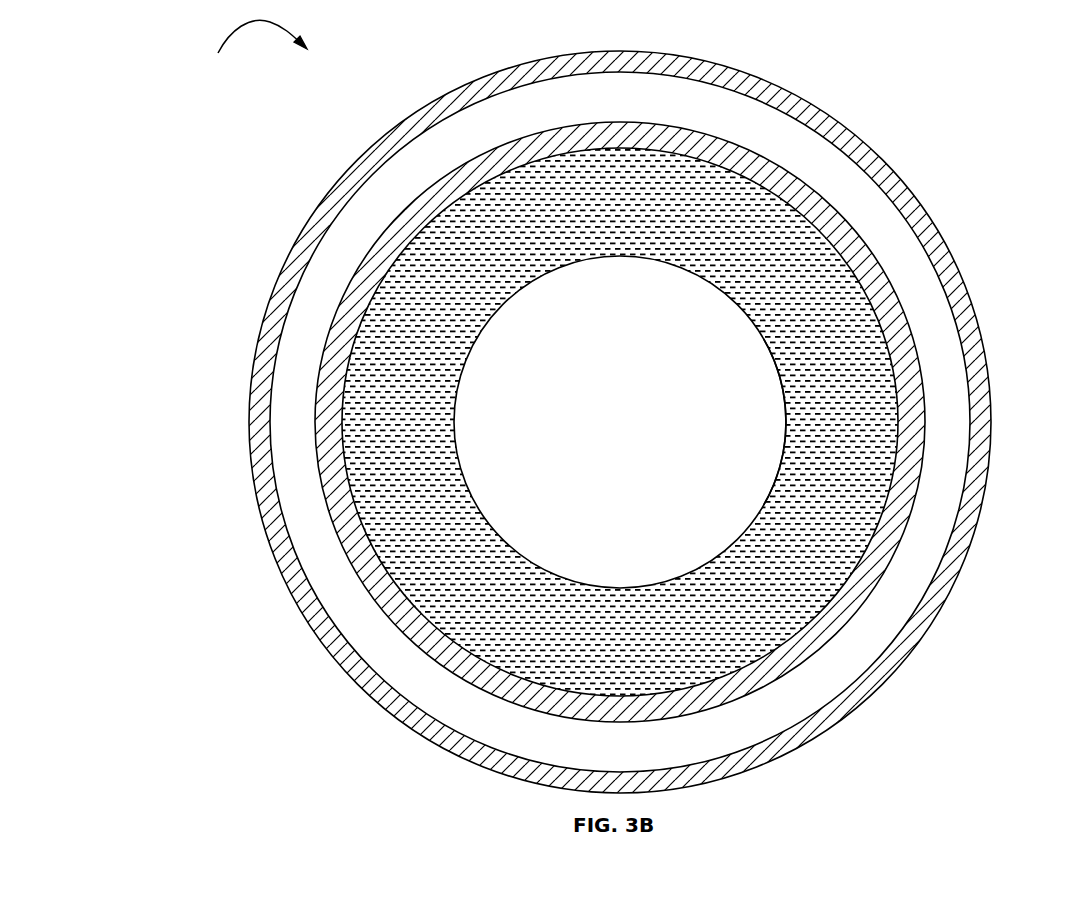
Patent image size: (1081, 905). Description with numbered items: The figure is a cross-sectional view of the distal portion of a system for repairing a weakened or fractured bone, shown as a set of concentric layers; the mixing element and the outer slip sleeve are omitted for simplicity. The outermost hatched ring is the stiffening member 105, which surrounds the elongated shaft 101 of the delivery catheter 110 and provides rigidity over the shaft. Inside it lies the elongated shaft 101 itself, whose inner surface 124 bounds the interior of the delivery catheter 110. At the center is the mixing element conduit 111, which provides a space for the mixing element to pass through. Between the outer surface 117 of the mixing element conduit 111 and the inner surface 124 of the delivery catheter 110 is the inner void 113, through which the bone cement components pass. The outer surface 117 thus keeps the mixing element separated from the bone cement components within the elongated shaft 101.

The delivery catheter 110 is at (249, 48).
The stiffening member 105 is at (802, 102).
The elongated shaft 101 is at (800, 200).
The inner surface of the delivery catheter 124 is at (865, 283).
The inner void 113 is at (820, 347).
The outer surface of the mixing element conduit 117 is at (784, 397).
The mixing element conduit 111 is at (640, 462).